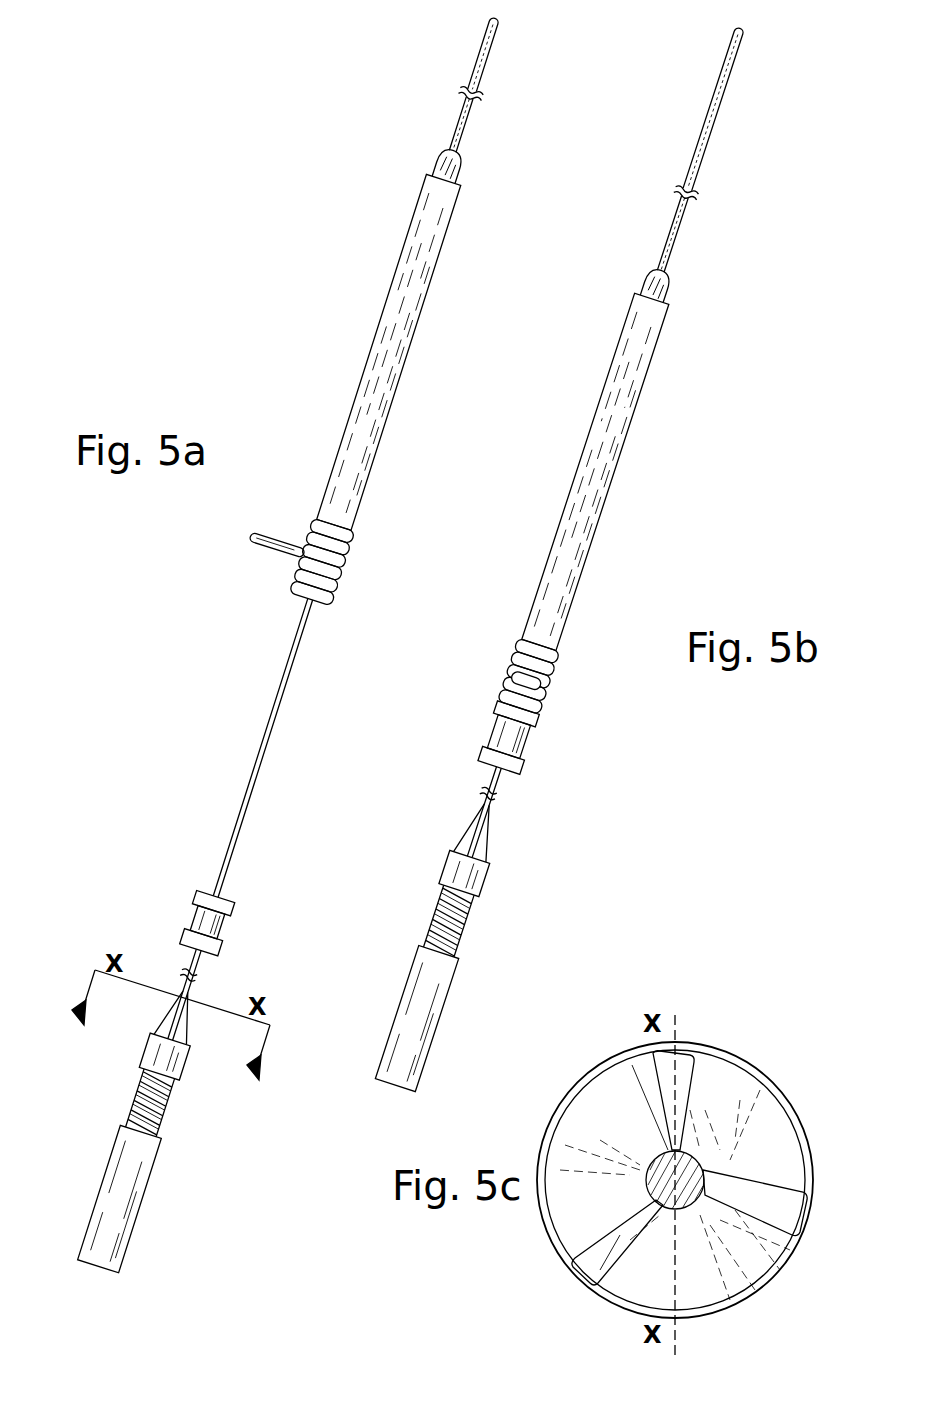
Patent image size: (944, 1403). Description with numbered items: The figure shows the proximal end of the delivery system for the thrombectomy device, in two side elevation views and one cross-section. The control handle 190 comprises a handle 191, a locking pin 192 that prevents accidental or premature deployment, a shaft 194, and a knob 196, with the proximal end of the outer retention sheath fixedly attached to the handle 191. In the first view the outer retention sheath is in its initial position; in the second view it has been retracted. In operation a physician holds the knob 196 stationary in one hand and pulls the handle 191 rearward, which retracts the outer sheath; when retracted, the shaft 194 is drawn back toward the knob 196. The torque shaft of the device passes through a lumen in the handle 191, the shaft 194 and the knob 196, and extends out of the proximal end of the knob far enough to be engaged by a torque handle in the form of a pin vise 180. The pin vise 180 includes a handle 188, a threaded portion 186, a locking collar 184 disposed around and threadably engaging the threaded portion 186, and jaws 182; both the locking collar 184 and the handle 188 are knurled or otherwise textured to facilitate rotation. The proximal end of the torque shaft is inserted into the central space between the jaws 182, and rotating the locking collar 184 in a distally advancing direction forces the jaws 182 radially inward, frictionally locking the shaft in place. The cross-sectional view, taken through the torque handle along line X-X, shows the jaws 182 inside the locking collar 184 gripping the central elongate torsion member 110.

In FIG. 5C, the elongate torsion member 110 is at (683, 1152).
In FIG. 5A, the pin vise 180 is at (213, 1147).
In FIG. 5A, the jaws 182 is at (178, 1016).
In FIG. 5B, the jaws 182 is at (478, 830).
In FIG. 5C, the jaws 182 is at (610, 1090).
In FIG. 5A, the locking collar 184 is at (164, 1056).
In FIG. 5B, the locking collar 184 is at (464, 873).
In FIG. 5C, the locking collar 184 is at (790, 1255).
In FIG. 5A, the threaded portion 186 is at (150, 1103).
In FIG. 5B, the threaded portion 186 is at (449, 921).
In FIG. 5A, the handle 188 is at (120, 1198).
In FIG. 5B, the handle 188 is at (416, 1018).
In FIG. 5A, the control handle 190 is at (148, 725).
In FIG. 5B, the control handle 190 is at (655, 571).
In FIG. 5A, the handle 191 is at (393, 337).
In FIG. 5B, the handle 191 is at (600, 458).
In FIG. 5A, the locking pin 192 is at (296, 554).
In FIG. 5B, the locking pin 192 is at (528, 676).
In FIG. 5A, the shaft 194 is at (262, 747).
In FIG. 5A, the knob 196 is at (207, 922).
In FIG. 5B, the knob 196 is at (508, 738).